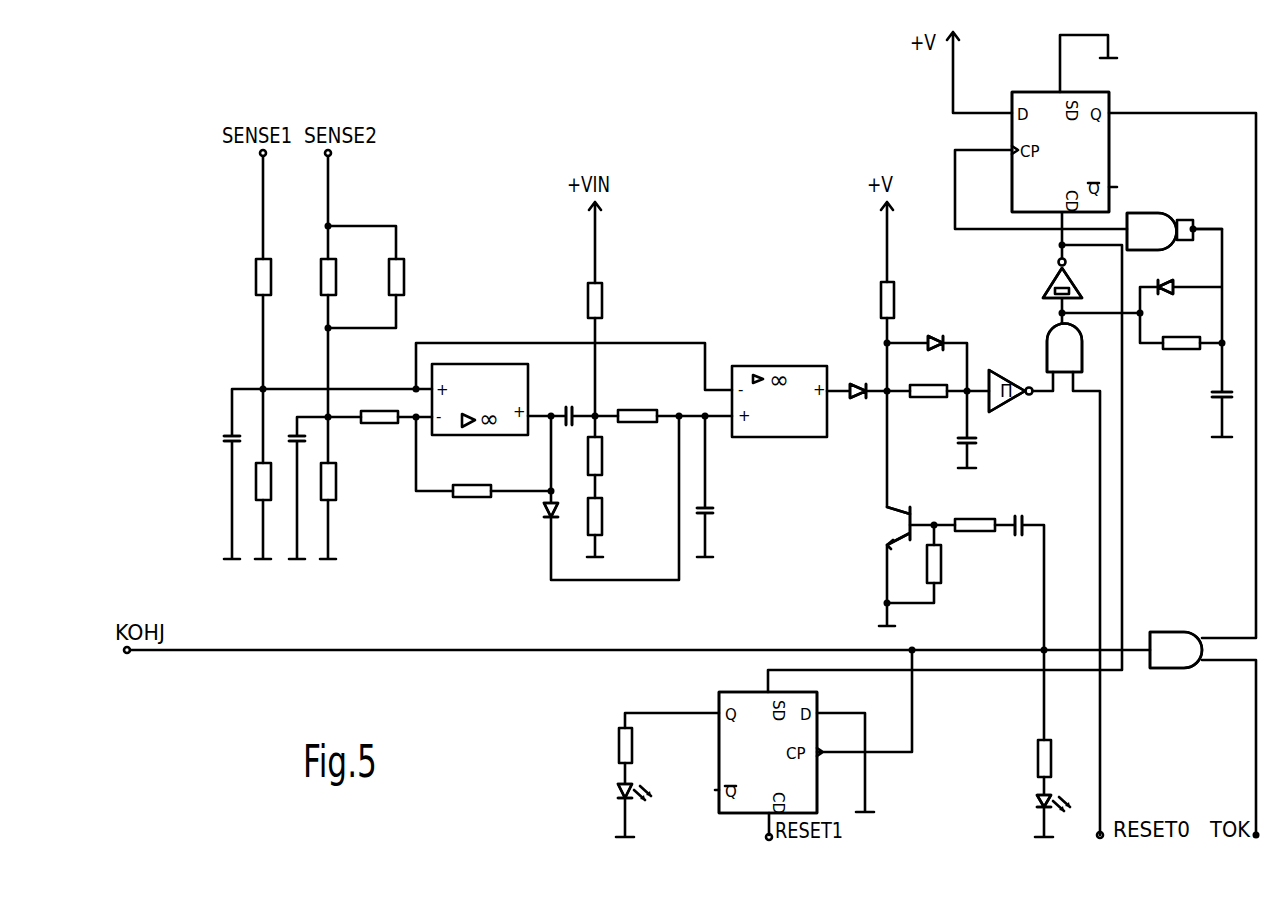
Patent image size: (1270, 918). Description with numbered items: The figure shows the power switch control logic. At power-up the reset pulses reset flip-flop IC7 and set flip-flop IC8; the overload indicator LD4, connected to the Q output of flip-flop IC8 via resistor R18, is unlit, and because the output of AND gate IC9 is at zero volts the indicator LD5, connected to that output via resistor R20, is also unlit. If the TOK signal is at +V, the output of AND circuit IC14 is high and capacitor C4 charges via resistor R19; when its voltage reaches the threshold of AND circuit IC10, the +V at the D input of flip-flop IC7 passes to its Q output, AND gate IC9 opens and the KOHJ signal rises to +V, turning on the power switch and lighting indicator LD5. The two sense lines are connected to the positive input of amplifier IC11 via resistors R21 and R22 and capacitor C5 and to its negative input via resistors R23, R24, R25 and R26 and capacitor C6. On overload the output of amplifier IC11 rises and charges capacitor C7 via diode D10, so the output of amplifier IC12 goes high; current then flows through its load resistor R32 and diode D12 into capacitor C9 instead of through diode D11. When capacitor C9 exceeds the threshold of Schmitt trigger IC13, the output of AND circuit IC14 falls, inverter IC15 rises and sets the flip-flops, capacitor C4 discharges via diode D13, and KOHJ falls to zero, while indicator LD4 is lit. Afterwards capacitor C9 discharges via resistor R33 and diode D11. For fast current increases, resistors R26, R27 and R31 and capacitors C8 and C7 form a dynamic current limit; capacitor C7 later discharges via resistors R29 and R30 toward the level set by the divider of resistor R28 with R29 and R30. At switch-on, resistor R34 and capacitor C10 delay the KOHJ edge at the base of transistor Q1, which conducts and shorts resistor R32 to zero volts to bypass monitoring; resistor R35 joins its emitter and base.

The resistor R18 is at (644, 744).
The resistor R19 is at (1181, 328).
The resistor R20 is at (1027, 757).
The resistor R21 is at (280, 277).
The resistor R22 is at (254, 492).
The resistor R23 is at (345, 277).
The resistor R24 is at (413, 277).
The resistor R25 is at (348, 481).
The resistor R26 is at (379, 431).
The resistor R27 is at (472, 477).
The resistor R28 is at (614, 300).
The resistor R29 is at (613, 456).
The resistor R30 is at (615, 516).
The resistor R31 is at (637, 401).
The resistor R32 is at (906, 300).
The resistor R33 is at (928, 378).
The resistor R34 is at (975, 511).
The resistor R35 is at (953, 565).
The capacitor C4 is at (1212, 381).
The capacitor C5 is at (216, 449).
The capacitor C6 is at (307, 449).
The capacitor C7 is at (716, 495).
The capacitor C8 is at (565, 399).
The capacitor C9 is at (979, 453).
The capacitor C10 is at (1036, 513).
The diode D10 is at (530, 521).
The diode D11 is at (854, 408).
The diode D12 is at (954, 331).
The diode D13 is at (1185, 274).
The flip-flop IC7 is at (1038, 152).
The flip-flop IC8 is at (767, 735).
The AND gate IC9 is at (1176, 665).
The AND circuit IC10 is at (1152, 216).
The amplifier IC11 is at (480, 387).
The amplifier IC12 is at (779, 387).
The Schmitt trigger IC13 is at (1015, 400).
The AND circuit IC14 is at (1037, 348).
The inverter IC15 is at (1045, 277).
The transistor Q1 is at (878, 526).
The overload indicator LD4 is at (603, 792).
The indicator LD5 is at (1025, 799).